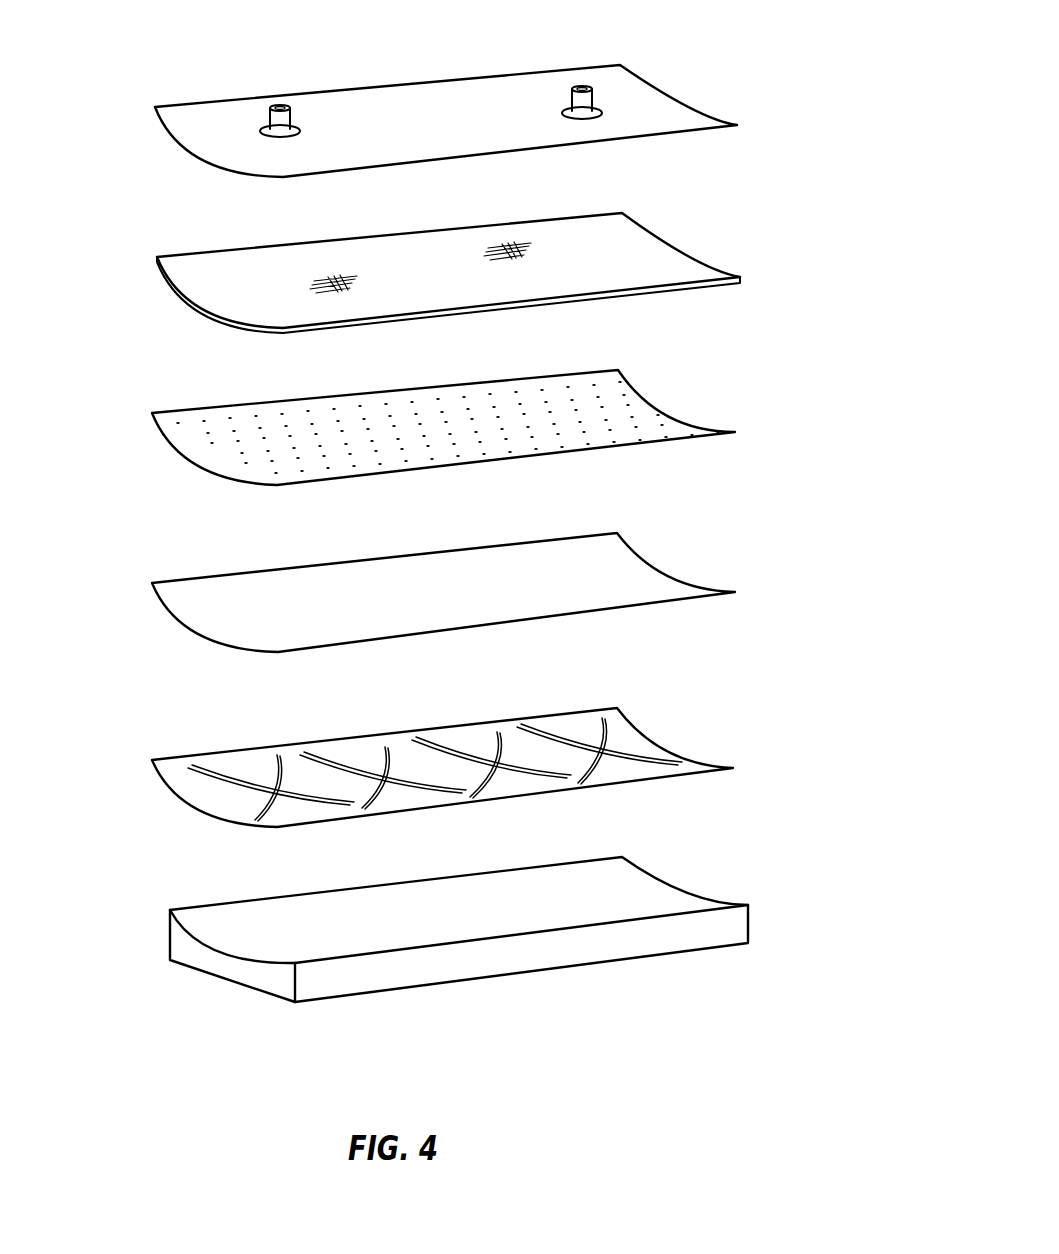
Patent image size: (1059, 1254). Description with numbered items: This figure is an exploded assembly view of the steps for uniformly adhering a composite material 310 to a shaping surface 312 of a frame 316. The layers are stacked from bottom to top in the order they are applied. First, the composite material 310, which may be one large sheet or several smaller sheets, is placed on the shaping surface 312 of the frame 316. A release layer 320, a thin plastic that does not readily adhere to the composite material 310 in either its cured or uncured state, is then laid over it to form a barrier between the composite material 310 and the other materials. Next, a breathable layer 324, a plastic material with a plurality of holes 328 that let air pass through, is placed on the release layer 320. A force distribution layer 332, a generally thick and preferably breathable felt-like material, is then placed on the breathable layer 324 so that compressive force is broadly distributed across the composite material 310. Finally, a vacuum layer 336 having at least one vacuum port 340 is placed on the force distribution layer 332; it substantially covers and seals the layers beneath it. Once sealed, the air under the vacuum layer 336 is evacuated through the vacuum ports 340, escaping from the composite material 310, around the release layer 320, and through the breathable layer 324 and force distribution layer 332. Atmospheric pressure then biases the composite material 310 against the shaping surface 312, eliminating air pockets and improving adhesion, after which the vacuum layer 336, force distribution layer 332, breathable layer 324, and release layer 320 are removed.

The vacuum layer 336 is at (203, 133).
The vacuum port 340 is at (280, 104).
The force distribution layer 332 is at (190, 280).
The breathable layer 324 is at (175, 449).
The holes 328 is at (583, 432).
The release layer 320 is at (193, 612).
The composite material 310 is at (193, 790).
The shaping surface 312 is at (213, 927).
The frame 316 is at (625, 945).